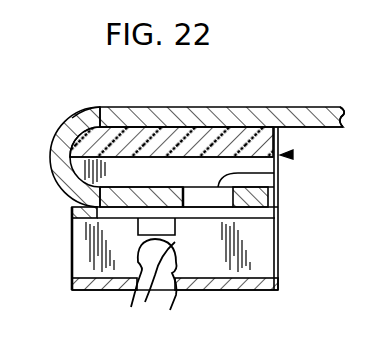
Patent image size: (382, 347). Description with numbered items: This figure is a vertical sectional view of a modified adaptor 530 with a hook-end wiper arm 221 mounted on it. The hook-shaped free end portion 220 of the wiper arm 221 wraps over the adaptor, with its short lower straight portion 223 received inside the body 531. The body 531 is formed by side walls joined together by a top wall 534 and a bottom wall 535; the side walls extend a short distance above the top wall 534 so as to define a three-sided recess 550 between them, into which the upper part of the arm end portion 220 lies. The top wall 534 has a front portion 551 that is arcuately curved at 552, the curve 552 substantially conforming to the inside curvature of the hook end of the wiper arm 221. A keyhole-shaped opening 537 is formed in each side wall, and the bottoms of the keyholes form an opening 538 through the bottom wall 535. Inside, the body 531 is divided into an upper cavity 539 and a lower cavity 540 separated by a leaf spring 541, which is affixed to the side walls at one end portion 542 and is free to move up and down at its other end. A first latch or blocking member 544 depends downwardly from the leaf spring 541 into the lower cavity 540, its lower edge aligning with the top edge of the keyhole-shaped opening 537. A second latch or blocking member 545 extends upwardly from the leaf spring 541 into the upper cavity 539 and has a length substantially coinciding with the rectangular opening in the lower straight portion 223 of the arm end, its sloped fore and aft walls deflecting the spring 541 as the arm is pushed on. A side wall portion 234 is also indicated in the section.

The free end portion 220 is at (107, 117).
The wiper arm 221 is at (340, 103).
The lower straight portion 223 is at (143, 196).
The side wall 234 is at (278, 172).
The adaptor 530 is at (292, 154).
The body 531 is at (105, 171).
The top wall 534 is at (163, 128).
The bottom wall 535 is at (244, 292).
The keyhole-shaped opening 537 is at (123, 288).
The opening 538 is at (175, 288).
The upper cavity 539 is at (280, 181).
The lower cavity 540 is at (265, 253).
The leaf spring 541 is at (203, 213).
The affixed end portion 542 is at (72, 211).
The first latch or blocking member 544 is at (138, 228).
The second latch or blocking member 545 is at (273, 193).
The three-sided recess 550 is at (218, 120).
The front portion 551 is at (75, 125).
The curve 552 is at (68, 132).